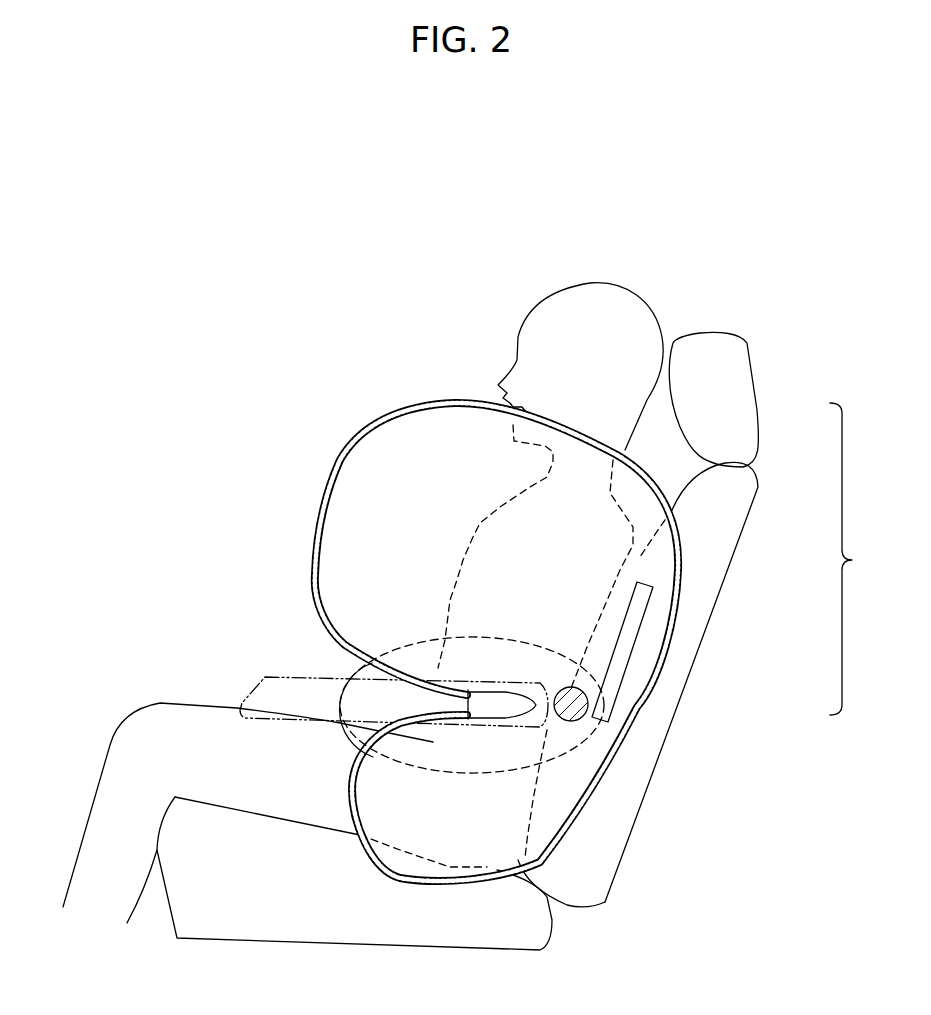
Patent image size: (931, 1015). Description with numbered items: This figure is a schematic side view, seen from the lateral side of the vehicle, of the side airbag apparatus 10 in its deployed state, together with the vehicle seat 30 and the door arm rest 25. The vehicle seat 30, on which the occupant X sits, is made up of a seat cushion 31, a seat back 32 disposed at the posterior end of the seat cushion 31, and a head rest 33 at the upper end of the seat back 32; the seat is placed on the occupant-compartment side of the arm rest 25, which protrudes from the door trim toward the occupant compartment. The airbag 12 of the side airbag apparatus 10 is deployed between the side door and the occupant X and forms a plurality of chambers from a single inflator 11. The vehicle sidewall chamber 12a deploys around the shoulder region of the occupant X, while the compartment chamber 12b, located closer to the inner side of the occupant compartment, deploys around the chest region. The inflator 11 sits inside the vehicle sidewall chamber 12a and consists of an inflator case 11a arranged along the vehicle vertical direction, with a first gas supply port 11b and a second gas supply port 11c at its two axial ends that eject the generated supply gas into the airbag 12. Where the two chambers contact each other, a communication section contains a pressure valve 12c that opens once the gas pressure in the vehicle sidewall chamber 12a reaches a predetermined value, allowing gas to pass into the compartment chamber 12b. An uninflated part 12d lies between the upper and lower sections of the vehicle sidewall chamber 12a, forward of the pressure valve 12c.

The side airbag apparatus 10 is at (455, 297).
The inflator 11 is at (612, 612).
The inflator case 11a is at (622, 615).
The first gas supply port 11b is at (643, 578).
The second gas supply port 11c is at (597, 722).
The airbag 12 is at (440, 400).
The vehicle sidewall chamber 12a is at (407, 420).
The compartment chamber 12b is at (352, 672).
The pressure valve 12c is at (567, 687).
The uninflated part 12d is at (500, 693).
The arm rest 25 is at (285, 688).
The vehicle seat 30 is at (519, 641).
The seat cushion 31 is at (493, 918).
The seat back 32 is at (707, 553).
The head rest 33 is at (728, 415).
The occupant X is at (622, 283).